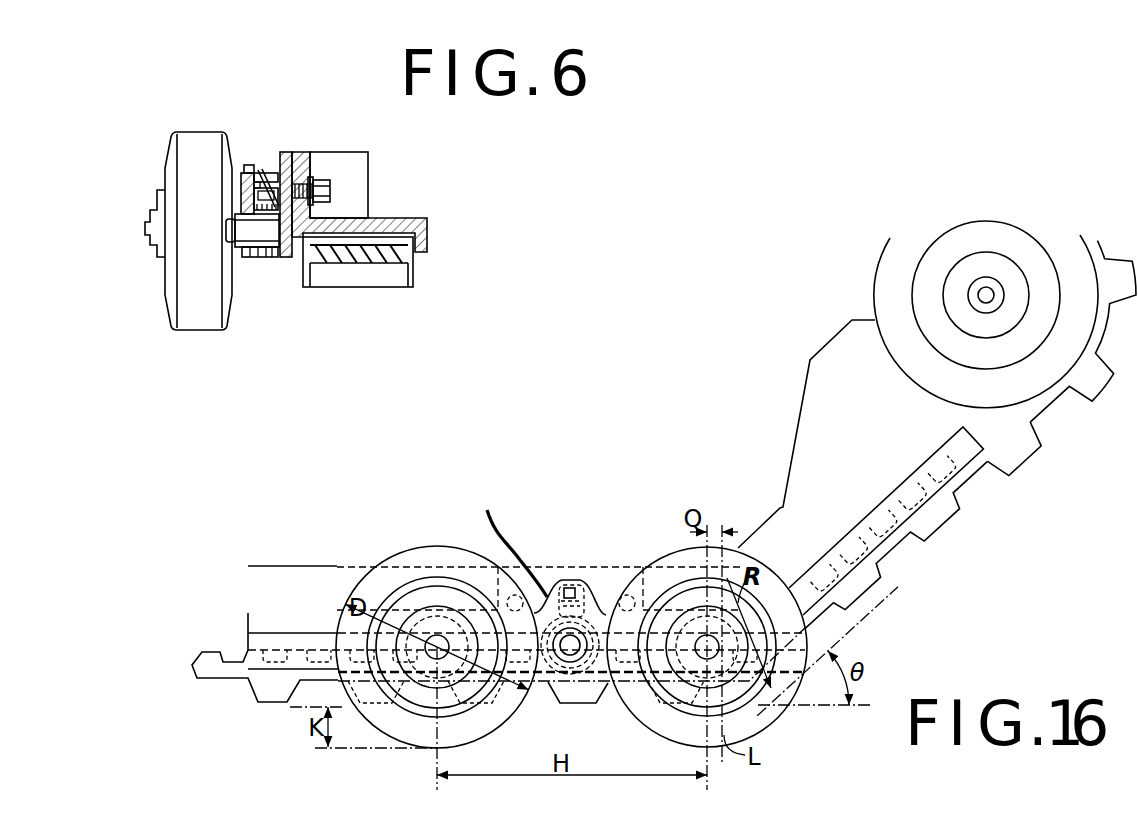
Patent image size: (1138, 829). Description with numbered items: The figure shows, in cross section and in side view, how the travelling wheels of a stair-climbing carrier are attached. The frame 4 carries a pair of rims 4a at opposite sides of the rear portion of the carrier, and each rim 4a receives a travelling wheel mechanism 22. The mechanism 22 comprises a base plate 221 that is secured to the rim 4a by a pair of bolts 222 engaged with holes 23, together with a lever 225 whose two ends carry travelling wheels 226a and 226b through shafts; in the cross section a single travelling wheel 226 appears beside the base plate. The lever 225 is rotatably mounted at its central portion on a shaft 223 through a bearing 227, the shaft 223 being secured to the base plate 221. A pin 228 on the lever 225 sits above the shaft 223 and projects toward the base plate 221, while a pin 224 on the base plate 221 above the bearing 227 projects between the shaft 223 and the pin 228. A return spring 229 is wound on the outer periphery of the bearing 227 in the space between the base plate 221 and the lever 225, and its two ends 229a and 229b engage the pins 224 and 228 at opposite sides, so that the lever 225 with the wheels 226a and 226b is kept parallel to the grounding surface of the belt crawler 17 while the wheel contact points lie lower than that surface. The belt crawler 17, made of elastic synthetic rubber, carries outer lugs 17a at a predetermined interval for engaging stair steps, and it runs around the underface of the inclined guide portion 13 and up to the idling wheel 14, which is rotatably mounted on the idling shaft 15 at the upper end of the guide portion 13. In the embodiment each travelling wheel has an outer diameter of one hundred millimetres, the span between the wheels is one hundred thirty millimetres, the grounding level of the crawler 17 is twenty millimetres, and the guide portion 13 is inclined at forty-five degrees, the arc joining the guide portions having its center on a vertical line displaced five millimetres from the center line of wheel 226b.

In FIG. 6, the frame 4 is at (362, 210).
In FIG. 16, the frame 4 is at (295, 583).
In FIG. 6, the rim 4a is at (312, 171).
In FIG. 16, the rim 4a is at (642, 568).
In FIG. 16, the inclined guide portion 13 is at (920, 477).
In FIG. 16, the idling wheel 14 is at (890, 275).
In FIG. 16, the idling shaft 15 is at (988, 300).
In FIG. 6, the belt crawler 17 is at (413, 270).
In FIG. 16, the belt crawler 17 is at (948, 520).
In FIG. 6, the lug 17a is at (360, 282).
In FIG. 16, the lug 17a is at (1027, 453).
In FIG. 6, the travelling wheel mechanism 22 is at (166, 300).
In FIG. 6, the hole 23 is at (321, 201).
In FIG. 6, the base plate 221 is at (286, 258).
In FIG. 16, the base plate 221 is at (480, 562).
In FIG. 6, the bolt 222 is at (331, 190).
In FIG. 6, the shaft 223 is at (245, 229).
In FIG. 16, the shaft 223 is at (582, 660).
In FIG. 6, the pin 224 is at (262, 196).
In FIG. 16, the pin 224 is at (578, 582).
In FIG. 6, the lever 225 is at (246, 166).
In FIG. 16, the lever 225 is at (511, 538).
In FIG. 6, the travelling wheel 226 is at (201, 322).
In FIG. 16, the travelling wheel 226a is at (415, 556).
In FIG. 16, the travelling wheel 226b is at (773, 573).
In FIG. 6, the bearing 227 is at (248, 251).
In FIG. 16, the bearing 227 is at (570, 655).
In FIG. 6, the pin 228 is at (268, 172).
In FIG. 16, the pin 228 is at (560, 580).
In FIG. 6, the return spring 229 is at (262, 250).
In FIG. 6, the spring end 229a is at (252, 188).
In FIG. 16, the spring end 229a is at (580, 577).
In FIG. 6, the spring end 229b is at (262, 176).
In FIG. 16, the spring end 229b is at (549, 583).